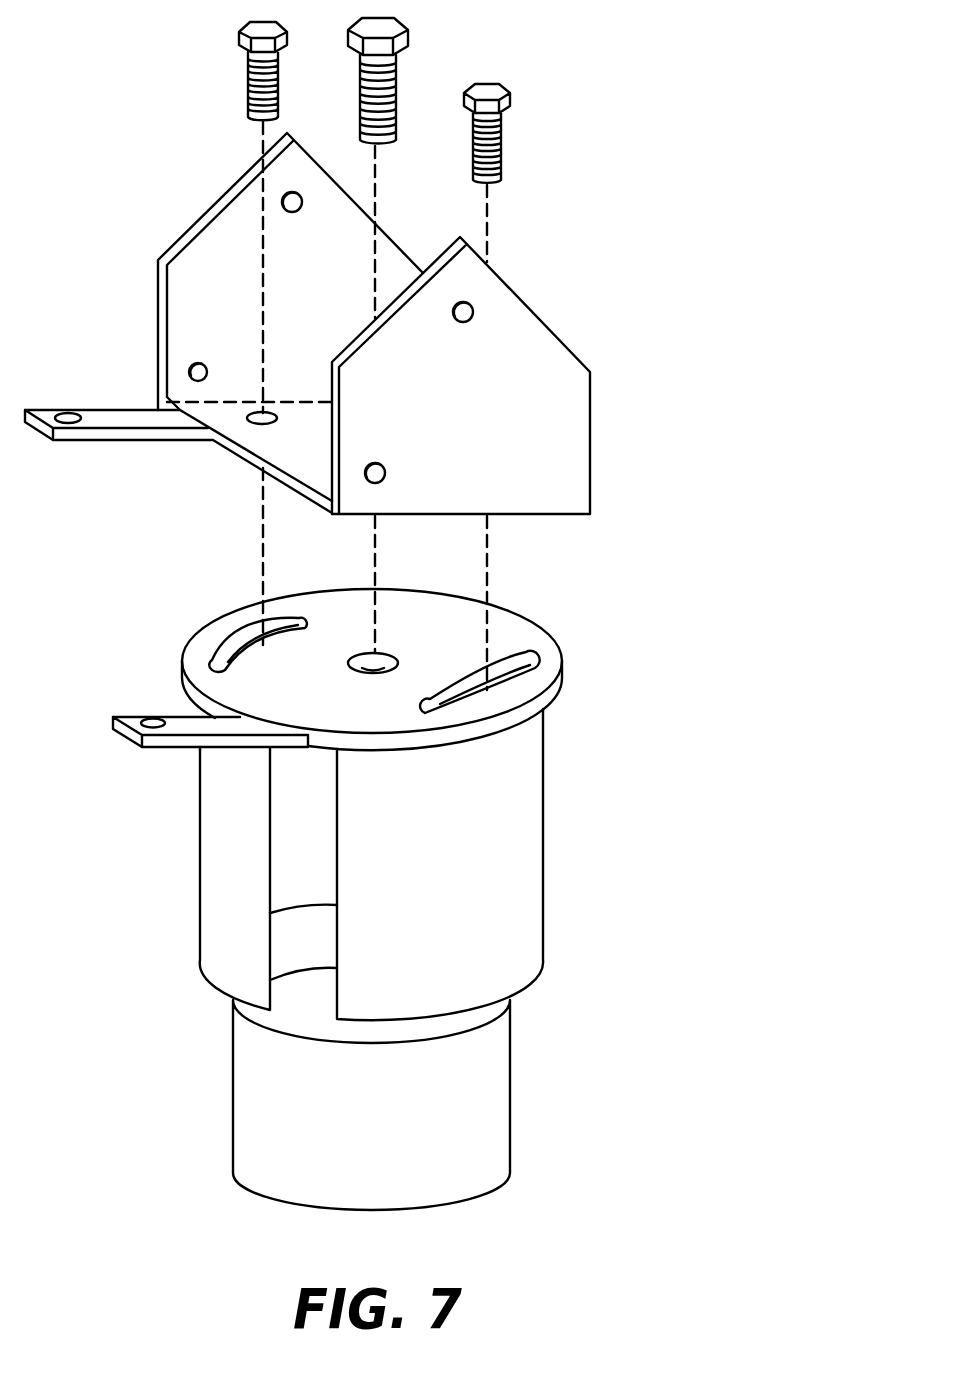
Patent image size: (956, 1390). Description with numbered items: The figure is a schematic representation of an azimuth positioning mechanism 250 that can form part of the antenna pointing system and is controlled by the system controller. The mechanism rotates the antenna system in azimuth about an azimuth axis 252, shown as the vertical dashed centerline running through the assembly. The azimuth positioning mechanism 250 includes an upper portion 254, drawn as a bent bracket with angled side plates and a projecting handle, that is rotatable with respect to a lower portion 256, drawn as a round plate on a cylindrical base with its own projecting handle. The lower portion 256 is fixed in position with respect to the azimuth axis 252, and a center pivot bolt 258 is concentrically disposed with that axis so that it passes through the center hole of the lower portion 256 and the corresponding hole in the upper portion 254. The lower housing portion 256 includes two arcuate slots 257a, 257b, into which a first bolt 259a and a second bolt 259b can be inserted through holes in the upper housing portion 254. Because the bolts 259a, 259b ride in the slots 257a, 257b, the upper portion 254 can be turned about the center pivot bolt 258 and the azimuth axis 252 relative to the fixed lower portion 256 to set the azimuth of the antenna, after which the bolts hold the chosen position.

The azimuth positioning mechanism 250 is at (410, 605).
The azimuth axis 252 is at (375, 562).
The upper portion 254 is at (572, 497).
The lower portion 256 is at (356, 889).
The slot 257a is at (230, 657).
The slot 257b is at (530, 652).
The center pivot bolt 258 is at (398, 83).
The first bolt 259a is at (247, 72).
The second bolt 259b is at (502, 142).